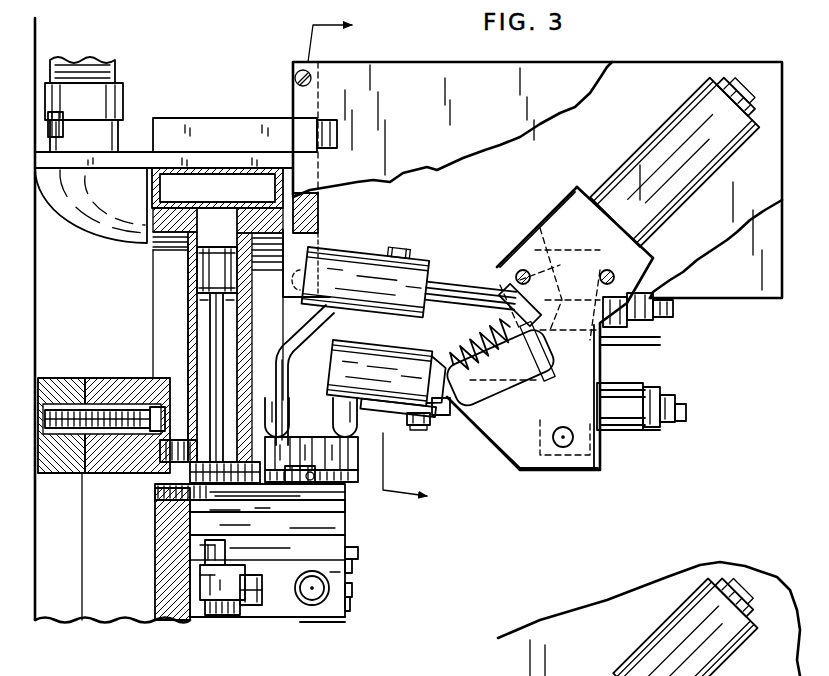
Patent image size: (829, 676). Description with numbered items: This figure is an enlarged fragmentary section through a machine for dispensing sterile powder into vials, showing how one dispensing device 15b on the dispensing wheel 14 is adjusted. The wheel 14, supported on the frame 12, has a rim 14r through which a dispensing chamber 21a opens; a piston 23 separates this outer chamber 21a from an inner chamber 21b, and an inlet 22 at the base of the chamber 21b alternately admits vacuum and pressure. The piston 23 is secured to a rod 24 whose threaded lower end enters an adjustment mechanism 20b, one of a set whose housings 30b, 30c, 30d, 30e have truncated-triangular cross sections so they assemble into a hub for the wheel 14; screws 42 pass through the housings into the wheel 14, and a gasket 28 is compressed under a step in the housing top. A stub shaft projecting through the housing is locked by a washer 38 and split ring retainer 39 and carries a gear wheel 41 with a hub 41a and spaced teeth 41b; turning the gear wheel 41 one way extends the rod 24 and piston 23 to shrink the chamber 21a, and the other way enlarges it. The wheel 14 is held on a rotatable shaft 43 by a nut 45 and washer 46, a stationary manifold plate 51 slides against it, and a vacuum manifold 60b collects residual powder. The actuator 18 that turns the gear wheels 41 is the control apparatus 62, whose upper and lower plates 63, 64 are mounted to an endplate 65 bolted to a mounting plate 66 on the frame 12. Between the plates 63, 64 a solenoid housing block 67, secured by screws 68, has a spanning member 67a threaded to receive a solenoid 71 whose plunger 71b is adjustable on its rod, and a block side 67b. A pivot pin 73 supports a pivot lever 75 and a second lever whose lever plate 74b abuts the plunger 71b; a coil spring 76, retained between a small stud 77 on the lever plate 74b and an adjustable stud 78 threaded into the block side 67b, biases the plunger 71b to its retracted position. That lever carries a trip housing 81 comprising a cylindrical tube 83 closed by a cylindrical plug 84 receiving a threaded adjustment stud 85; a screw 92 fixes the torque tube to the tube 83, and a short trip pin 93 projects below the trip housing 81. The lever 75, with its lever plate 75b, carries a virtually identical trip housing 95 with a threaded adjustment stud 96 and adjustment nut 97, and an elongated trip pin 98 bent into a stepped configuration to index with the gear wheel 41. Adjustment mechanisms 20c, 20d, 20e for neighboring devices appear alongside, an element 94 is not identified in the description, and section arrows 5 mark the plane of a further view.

The section line for FIG. 5 is at (377, 264).
The frame 12 is at (38, 227).
The dispensing wheel 14 is at (150, 263).
The rim of wheel 14r is at (318, 219).
The dispensing device 15b is at (185, 301).
The actuator 18 is at (657, 341).
The adjustment mechanism 20b is at (323, 518).
The adjustment mechanism 20c is at (349, 553).
The adjustment mechanism 20d is at (349, 590).
The adjustment mechanism 20e is at (323, 625).
The dispensing chamber 21a is at (217, 225).
The inner chamber 21b is at (205, 358).
The inlet 22 is at (175, 452).
The piston 23 is at (206, 258).
The rod 24 is at (210, 333).
The gasket 28 is at (187, 480).
The housing 30b is at (210, 515).
The housing 30c is at (350, 565).
The housing 30d is at (350, 605).
The housing 30e is at (290, 625).
The washer 38 is at (296, 582).
The split ring retainer 39 is at (300, 592).
The gear wheel 41 is at (318, 452).
The hub 41a is at (300, 480).
The teeth 41b is at (335, 470).
The screws 42 is at (353, 500).
The rotatable shaft 43 is at (245, 620).
The nut 45 is at (212, 618).
The washer 46 is at (195, 585).
The manifold plate 51 is at (110, 385).
The vacuum manifold 60b is at (200, 168).
The control apparatus 62 is at (703, 60).
The upper plate 63 is at (570, 82).
The lower plate 64 is at (648, 83).
The endplate 65 is at (300, 112).
The mounting plate 66 is at (165, 118).
The solenoid housing block 67 is at (657, 257).
The spanning member 67a is at (583, 190).
The block side 67b is at (530, 472).
The screws 68 is at (521, 270).
The solenoid 71 is at (650, 152).
The plunger 71b is at (545, 235).
The pivot pin 73 is at (567, 443).
The lever plate 74b is at (514, 292).
The pivot lever 75 is at (609, 343).
The lever plate 75b is at (513, 295).
The coil spring 76 is at (488, 348).
The small stud 77 is at (481, 383).
The adjustable stud 78 is at (446, 416).
The trip housing 81 is at (347, 368).
The cylindrical tube 83 is at (614, 434).
The cylindrical plug 84 is at (660, 390).
The threaded adjustment stud 85 is at (685, 420).
The screw 92 is at (409, 427).
The trip pin 93 is at (378, 420).
The rod 94 is at (662, 432).
The trip housing 95 is at (437, 250).
The threaded adjustment stud 96 is at (655, 313).
The adjustment nut 97 is at (665, 283).
The elongated trip pin 98 is at (300, 343).